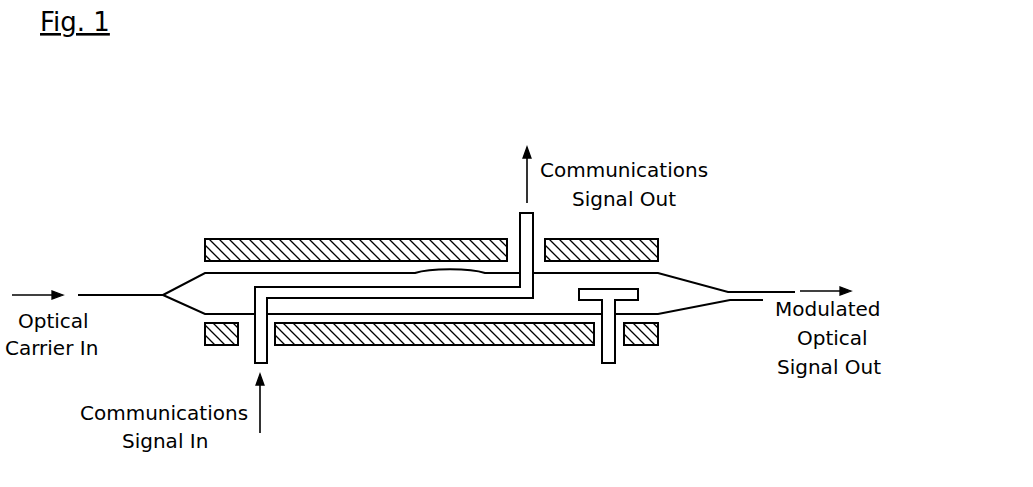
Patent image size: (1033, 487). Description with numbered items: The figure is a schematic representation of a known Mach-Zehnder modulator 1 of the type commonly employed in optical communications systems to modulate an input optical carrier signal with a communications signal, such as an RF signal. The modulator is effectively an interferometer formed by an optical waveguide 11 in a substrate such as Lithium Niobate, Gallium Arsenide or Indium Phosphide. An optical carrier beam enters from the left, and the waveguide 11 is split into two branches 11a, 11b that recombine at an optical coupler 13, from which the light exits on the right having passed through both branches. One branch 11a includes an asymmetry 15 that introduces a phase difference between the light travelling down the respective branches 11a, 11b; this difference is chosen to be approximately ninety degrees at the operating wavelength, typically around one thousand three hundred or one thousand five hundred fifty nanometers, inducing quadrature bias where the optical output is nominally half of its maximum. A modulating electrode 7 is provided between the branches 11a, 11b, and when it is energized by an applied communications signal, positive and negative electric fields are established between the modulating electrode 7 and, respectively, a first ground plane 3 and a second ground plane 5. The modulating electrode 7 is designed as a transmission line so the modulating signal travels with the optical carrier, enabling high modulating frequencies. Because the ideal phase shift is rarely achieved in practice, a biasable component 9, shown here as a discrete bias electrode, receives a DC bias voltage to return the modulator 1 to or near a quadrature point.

The MZ modulator 1 is at (193, 162).
The first ground plane 3 is at (362, 246).
The second ground plane 5 is at (432, 333).
The modulating electrode 7 is at (335, 293).
The biasable component 9 is at (606, 340).
The waveguide 11 is at (140, 295).
The first waveguide branch 11a is at (290, 272).
The second waveguide branch 11b is at (508, 318).
The optical coupler 13 is at (740, 292).
The asymmetry 15 is at (448, 270).